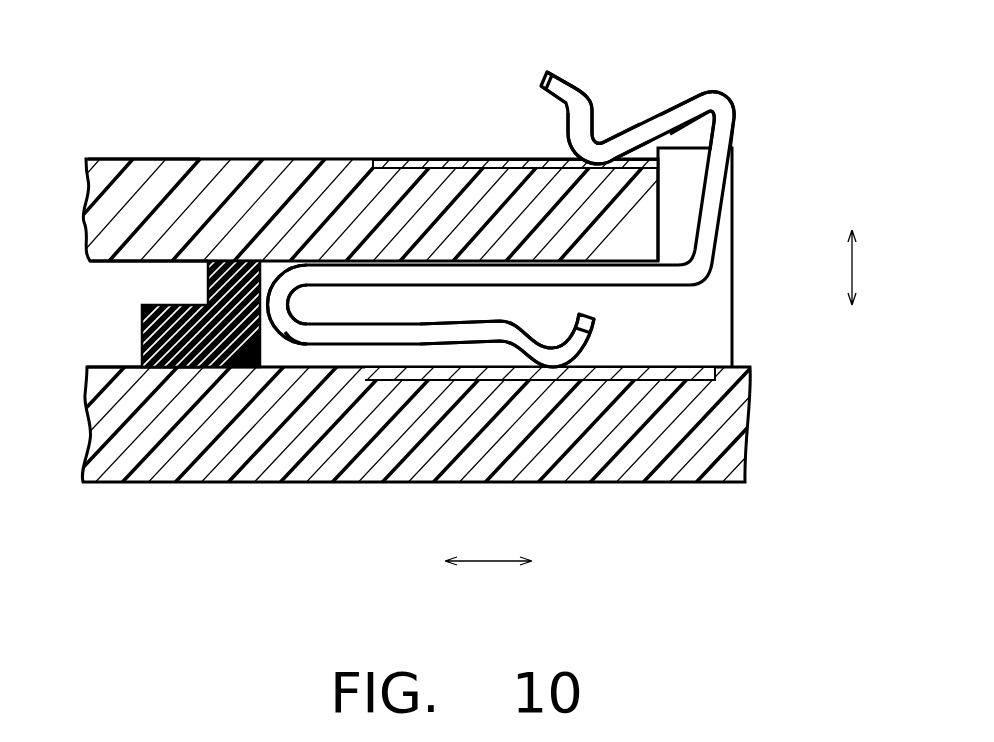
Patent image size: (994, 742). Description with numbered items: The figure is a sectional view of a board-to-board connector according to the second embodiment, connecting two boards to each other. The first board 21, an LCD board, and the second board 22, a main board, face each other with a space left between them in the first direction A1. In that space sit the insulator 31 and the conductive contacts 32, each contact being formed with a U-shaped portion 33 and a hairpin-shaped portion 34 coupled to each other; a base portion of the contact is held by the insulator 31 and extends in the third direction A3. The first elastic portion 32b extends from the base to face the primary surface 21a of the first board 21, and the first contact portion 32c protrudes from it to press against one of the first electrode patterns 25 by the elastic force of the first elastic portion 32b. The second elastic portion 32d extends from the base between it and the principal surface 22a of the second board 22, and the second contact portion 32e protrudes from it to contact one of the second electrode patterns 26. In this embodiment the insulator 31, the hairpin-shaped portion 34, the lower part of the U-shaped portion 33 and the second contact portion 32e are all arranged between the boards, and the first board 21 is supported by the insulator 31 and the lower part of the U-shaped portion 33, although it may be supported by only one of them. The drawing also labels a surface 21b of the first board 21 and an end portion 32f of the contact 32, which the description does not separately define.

The first board 21 is at (180, 173).
The primary surface of the first board 21a is at (119, 158).
The lower surface of upper housing 21b is at (144, 261).
The second board 22 is at (752, 437).
The principal surface of the second board 22a is at (121, 366).
The first electrode patterns 25 is at (433, 160).
The second electrode patterns 26 is at (708, 368).
The insulator 31 is at (142, 327).
The conductive contacts 32 is at (551, 276).
The first elastic portion 32b is at (705, 98).
The first contact portion 32c is at (596, 143).
The second elastic portion 32d is at (358, 333).
The second contact portion 32e is at (553, 355).
The free end of contact spring 32f is at (562, 88).
The U-shaped portion 33 is at (734, 208).
The hairpin-shaped portion 34 is at (298, 346).
The first direction A1 is at (868, 267).
The third direction A3 is at (488, 547).